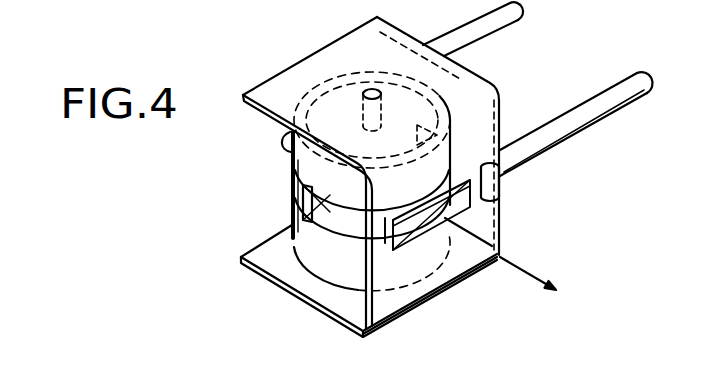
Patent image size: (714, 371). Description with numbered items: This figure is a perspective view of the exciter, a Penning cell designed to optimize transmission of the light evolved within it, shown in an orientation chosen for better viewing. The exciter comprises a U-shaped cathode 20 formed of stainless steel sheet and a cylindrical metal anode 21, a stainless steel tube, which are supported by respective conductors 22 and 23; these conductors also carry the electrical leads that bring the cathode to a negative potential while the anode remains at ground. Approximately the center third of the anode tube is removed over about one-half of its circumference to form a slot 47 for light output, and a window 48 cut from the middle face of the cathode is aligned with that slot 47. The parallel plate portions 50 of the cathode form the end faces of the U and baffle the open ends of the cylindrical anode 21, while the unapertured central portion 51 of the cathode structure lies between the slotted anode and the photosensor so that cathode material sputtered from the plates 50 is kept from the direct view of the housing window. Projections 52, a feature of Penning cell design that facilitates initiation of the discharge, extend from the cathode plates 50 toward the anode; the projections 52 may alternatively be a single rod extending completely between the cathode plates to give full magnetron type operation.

The U-shaped cathode 20 is at (337, 329).
The cylindrical metal anode 21 is at (282, 179).
The conductor 22 is at (582, 108).
The conductor 23 is at (508, 27).
The slot 47 is at (292, 216).
The window 48 is at (494, 201).
The parallel plate portions 50 is at (260, 106).
The unapertured central portion 51 is at (500, 127).
The projections 52 is at (364, 91).